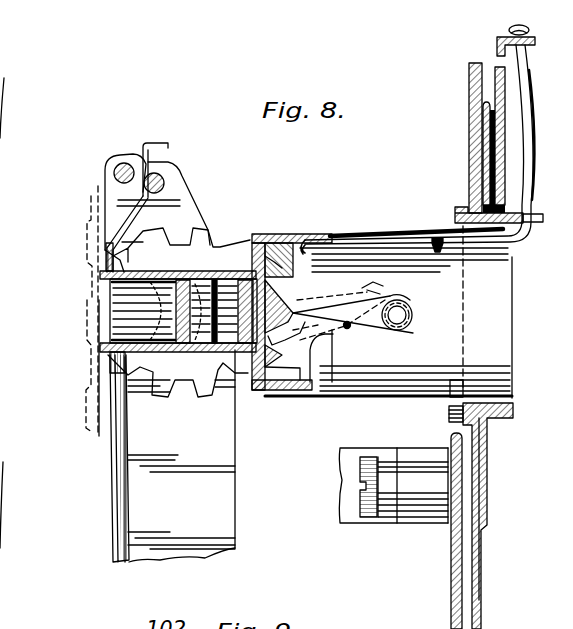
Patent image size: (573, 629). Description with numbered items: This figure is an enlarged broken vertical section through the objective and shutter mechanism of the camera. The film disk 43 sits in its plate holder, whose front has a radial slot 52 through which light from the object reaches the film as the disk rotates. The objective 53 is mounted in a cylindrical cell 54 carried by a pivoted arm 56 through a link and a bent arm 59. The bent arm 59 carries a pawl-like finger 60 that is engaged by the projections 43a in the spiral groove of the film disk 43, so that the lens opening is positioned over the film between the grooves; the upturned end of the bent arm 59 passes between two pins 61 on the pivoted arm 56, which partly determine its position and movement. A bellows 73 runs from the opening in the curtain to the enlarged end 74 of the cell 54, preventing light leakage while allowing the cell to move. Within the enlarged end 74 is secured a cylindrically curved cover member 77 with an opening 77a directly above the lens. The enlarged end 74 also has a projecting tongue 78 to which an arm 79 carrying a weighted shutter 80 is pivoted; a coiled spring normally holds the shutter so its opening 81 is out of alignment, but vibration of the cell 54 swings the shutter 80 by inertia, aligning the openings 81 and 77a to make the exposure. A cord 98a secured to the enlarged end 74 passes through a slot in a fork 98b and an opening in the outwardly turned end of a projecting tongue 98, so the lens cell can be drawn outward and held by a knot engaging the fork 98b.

The film disk 43 is at (97, 215).
The engaging projections 43a is at (100, 268).
The radial slot 52 is at (202, 274).
The objective 53 is at (207, 278).
The cylindrical casing or cell 54 is at (157, 275).
The pivoted arm 56 is at (216, 500).
The bent arm 59 is at (110, 466).
The pawl-like finger 60 is at (100, 310).
The pins 61 is at (122, 162).
The bellows 73 is at (362, 288).
The enlarged end of the cell 74 is at (270, 256).
The cover member 77 is at (277, 392).
The opening in cover member 77a is at (243, 373).
The projecting tongue 78 is at (333, 388).
The arm 79 is at (436, 239).
The weighted shutter 80 is at (293, 313).
The shutter opening 81 is at (307, 243).
The projecting tongue 98 is at (505, 98).
The cord 98a is at (532, 155).
The fork 98b is at (535, 224).